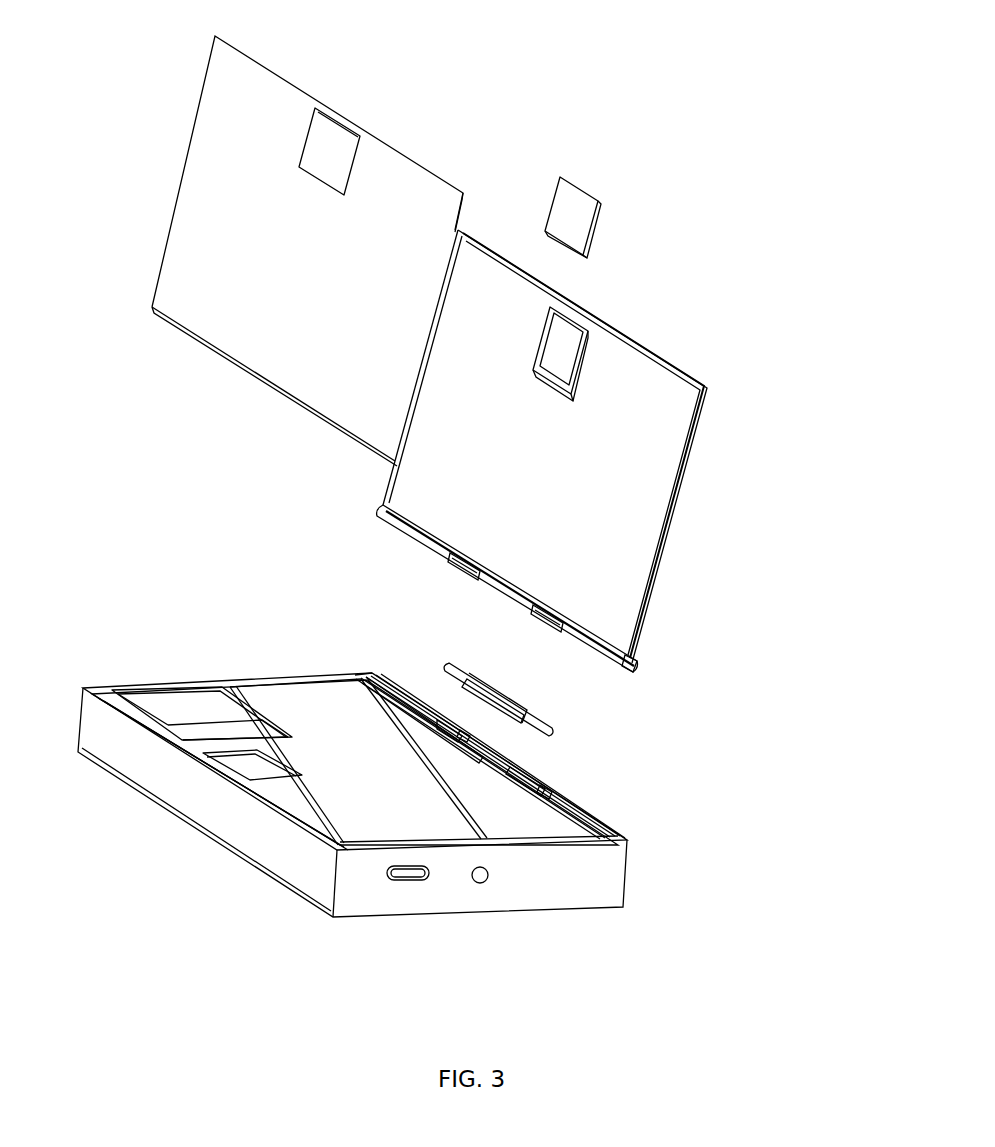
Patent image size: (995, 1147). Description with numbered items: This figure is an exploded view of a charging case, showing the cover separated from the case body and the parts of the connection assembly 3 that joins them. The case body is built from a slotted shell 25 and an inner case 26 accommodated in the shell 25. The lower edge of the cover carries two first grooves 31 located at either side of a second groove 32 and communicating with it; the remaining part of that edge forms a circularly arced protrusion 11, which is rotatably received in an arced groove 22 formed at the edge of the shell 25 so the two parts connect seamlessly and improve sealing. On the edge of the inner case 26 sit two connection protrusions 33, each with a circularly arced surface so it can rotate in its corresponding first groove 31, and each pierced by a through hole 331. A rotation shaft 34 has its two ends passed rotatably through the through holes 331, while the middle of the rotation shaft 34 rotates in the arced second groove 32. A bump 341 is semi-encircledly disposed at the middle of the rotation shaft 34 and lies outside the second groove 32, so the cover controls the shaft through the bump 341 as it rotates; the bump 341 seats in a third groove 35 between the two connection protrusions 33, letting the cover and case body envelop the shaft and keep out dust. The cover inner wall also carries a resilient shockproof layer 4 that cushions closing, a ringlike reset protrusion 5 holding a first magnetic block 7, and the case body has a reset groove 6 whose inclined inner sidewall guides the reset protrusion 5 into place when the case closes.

The connection assembly 3 is at (297, 573).
The shockproof layer 4 is at (395, 183).
The reset protrusion 5 is at (593, 318).
The reset groove 6 is at (248, 767).
The first magnetic block 7 is at (575, 203).
The arced protrusion 11 is at (612, 670).
The arced groove 22 is at (627, 840).
The shell 25 is at (557, 883).
The inner case 26 is at (343, 813).
The first groove 31 is at (448, 565).
The second groove 32 is at (493, 597).
The connection protrusion 33 is at (516, 756).
The rotation shaft 34 is at (541, 695).
The third groove 35 is at (480, 765).
The through hole 331 is at (548, 790).
The bump 341 is at (478, 682).